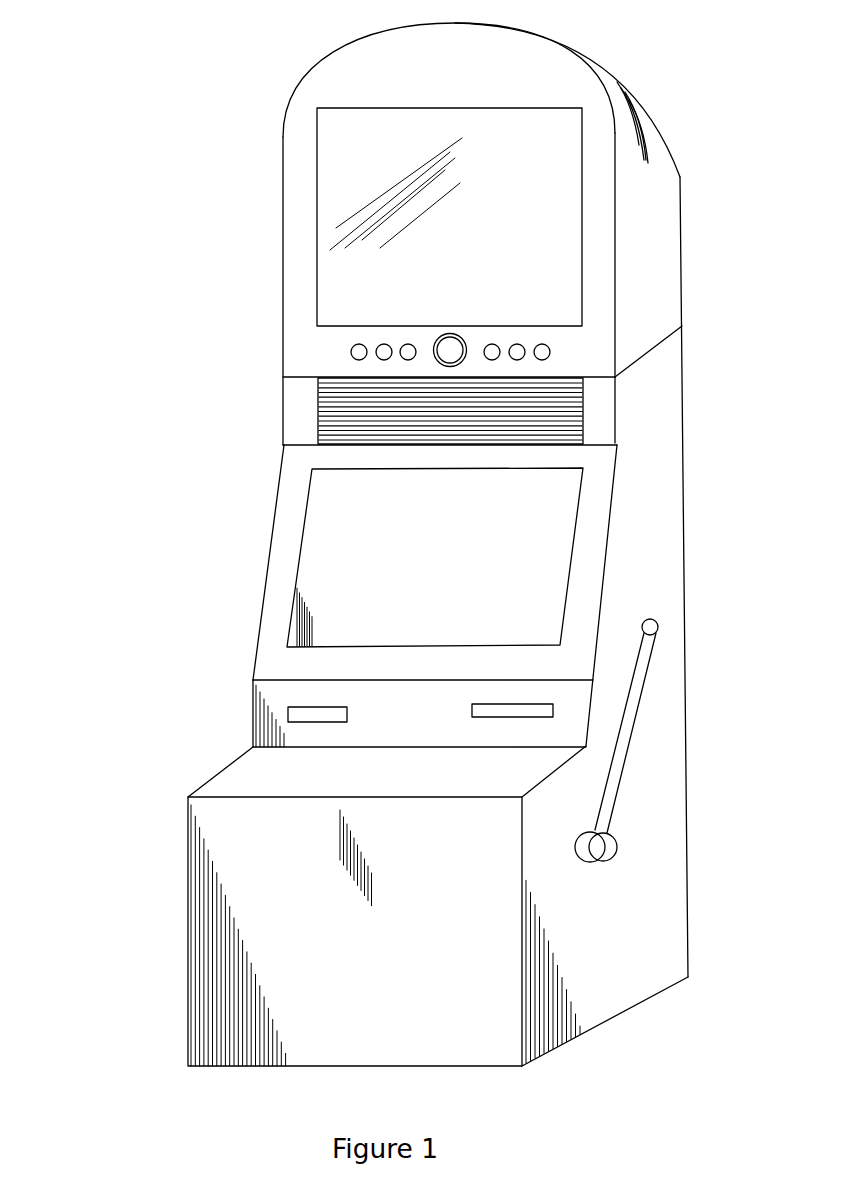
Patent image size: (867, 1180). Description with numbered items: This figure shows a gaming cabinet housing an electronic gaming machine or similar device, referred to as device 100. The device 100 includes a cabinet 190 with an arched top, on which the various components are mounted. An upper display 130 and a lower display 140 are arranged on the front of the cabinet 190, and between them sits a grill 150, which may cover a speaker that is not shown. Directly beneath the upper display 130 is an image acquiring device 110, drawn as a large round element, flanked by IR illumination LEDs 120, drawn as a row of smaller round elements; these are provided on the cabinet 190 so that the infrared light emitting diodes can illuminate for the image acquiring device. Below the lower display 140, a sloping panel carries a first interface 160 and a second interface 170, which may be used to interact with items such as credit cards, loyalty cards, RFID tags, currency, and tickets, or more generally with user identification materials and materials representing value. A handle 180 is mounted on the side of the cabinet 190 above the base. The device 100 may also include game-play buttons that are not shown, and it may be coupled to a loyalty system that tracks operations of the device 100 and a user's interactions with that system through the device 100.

The device 100 is at (96, 90).
The image acquiring device 110 is at (447, 343).
The IR illumination LEDs 120 is at (386, 350).
The display 130 is at (323, 145).
The display 140 is at (318, 543).
The grill 150 is at (603, 410).
The first interface 160 is at (540, 707).
The second interface 170 is at (292, 716).
The handle 180 is at (640, 690).
The cabinet 190 is at (615, 67).